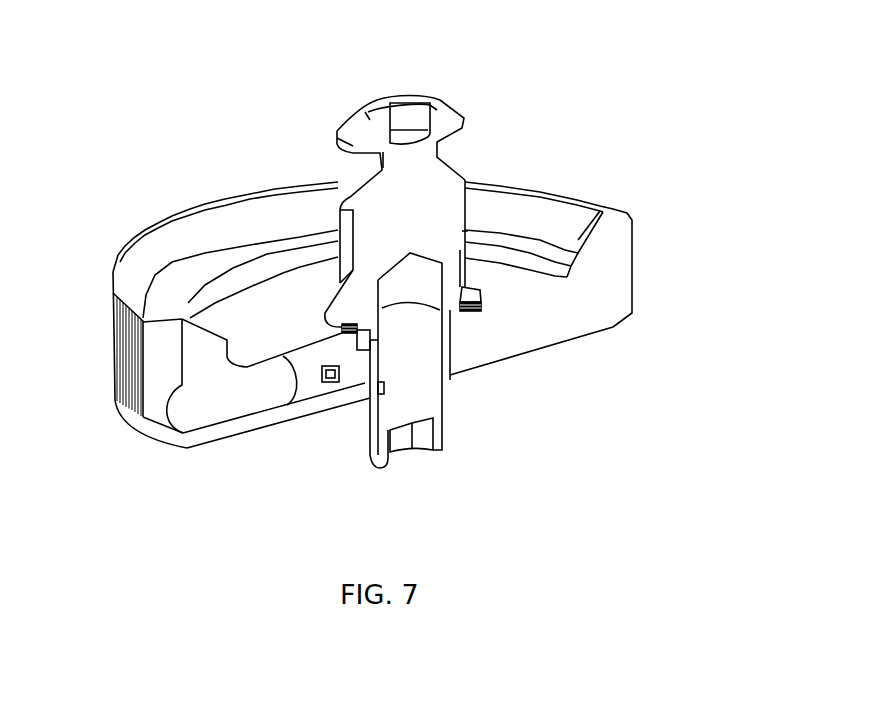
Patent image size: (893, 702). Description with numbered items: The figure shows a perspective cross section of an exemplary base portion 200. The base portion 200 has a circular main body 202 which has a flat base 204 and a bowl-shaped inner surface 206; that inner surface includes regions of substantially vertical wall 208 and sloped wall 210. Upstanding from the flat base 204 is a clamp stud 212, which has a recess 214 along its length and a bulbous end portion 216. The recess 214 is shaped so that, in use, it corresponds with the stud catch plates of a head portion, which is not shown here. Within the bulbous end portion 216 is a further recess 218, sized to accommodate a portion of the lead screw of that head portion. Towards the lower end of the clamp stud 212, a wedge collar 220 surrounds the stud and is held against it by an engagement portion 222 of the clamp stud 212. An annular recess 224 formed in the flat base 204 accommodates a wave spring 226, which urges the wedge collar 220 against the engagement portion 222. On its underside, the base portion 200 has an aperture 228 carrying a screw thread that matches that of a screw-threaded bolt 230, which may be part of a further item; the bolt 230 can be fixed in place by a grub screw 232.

The base portion 200 is at (182, 184).
The circular main body 202 is at (633, 268).
The flat base 204 is at (535, 277).
The bowl-shaped inner surface 206 is at (223, 347).
The vertical wall 208 is at (578, 252).
The sloped wall 210 is at (173, 257).
The clamp stud 212 is at (467, 231).
The recess 214 is at (377, 168).
The bulbous end portion 216 is at (465, 118).
The recess 218 is at (405, 140).
The wedge collar 220 is at (476, 291).
The engagement portion 222 is at (347, 270).
The annular recess 224 is at (474, 310).
The wave spring 226 is at (349, 337).
The aperture 228 is at (449, 370).
The screw-threaded bolt 230 is at (437, 453).
The grub screw 232 is at (329, 381).